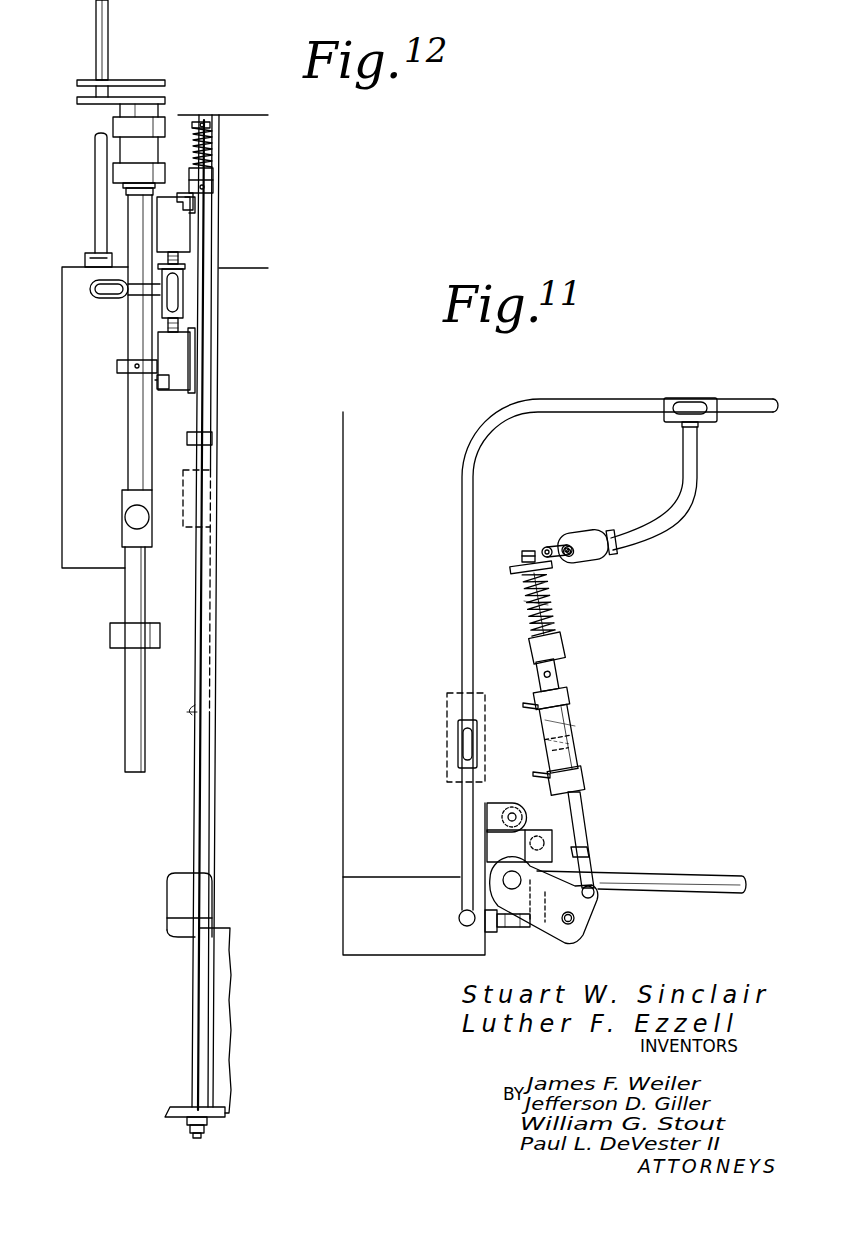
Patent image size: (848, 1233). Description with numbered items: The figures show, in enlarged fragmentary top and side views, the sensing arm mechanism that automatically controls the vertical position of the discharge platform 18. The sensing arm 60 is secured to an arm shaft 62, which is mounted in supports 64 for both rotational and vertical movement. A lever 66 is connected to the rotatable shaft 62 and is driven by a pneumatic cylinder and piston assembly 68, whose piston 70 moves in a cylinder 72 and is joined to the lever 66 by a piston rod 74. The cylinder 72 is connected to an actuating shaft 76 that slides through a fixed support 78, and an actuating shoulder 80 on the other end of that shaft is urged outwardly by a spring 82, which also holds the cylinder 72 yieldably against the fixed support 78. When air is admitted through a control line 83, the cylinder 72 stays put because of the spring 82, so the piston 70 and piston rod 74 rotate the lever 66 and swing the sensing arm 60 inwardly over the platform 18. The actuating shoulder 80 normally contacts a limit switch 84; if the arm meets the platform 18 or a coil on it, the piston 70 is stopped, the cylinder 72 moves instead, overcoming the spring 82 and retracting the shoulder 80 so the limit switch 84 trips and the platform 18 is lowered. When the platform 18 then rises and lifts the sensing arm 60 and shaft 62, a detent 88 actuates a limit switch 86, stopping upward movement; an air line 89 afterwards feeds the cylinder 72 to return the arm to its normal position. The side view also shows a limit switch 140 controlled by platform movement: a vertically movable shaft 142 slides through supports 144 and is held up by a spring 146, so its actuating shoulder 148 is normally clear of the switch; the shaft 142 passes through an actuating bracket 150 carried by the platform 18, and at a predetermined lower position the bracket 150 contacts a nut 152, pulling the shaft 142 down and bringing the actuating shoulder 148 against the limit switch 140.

In FIG. 12, the discharge platform 18 is at (218, 1020).
In FIG. 12, the sensing arm 60 is at (130, 518).
In FIG. 11, the sensing arm 60 is at (685, 871).
In FIG. 12, the arm shaft 62 is at (128, 710).
In FIG. 11, the arm shaft 62 is at (512, 871).
In FIG. 12, the supports 64 is at (113, 173).
In FIG. 12, the lever 66 is at (150, 80).
In FIG. 11, the lever 66 is at (565, 935).
In FIG. 11, the pneumatic cylinder and piston assembly 68 is at (574, 690).
In FIG. 11, the piston 70 is at (560, 740).
In FIG. 11, the cylinder 72 is at (568, 715).
In FIG. 11, the piston rod 74 is at (580, 805).
In FIG. 11, the actuating shaft 76 is at (530, 597).
In FIG. 11, the fixed support 78 is at (562, 648).
In FIG. 11, the actuating shoulder 80 is at (512, 565).
In FIG. 11, the spring 82 is at (550, 598).
In FIG. 11, the control line 83 is at (543, 772).
In FIG. 11, the limit switch 84 is at (585, 535).
In FIG. 12, the limit switch 86 is at (178, 350).
In FIG. 12, the detent 88 is at (162, 393).
In FIG. 11, the air line 89 is at (533, 704).
In FIG. 12, the limit switch 140 is at (178, 233).
In FIG. 12, the vertically movable shaft 142 is at (203, 462).
In FIG. 12, the supports 144 is at (213, 178).
In FIG. 12, the spring 146 is at (213, 150).
In FIG. 12, the actuating shoulder 148 is at (213, 188).
In FIG. 12, the actuating bracket 150 is at (200, 937).
In FIG. 12, the nut 152 is at (207, 1130).